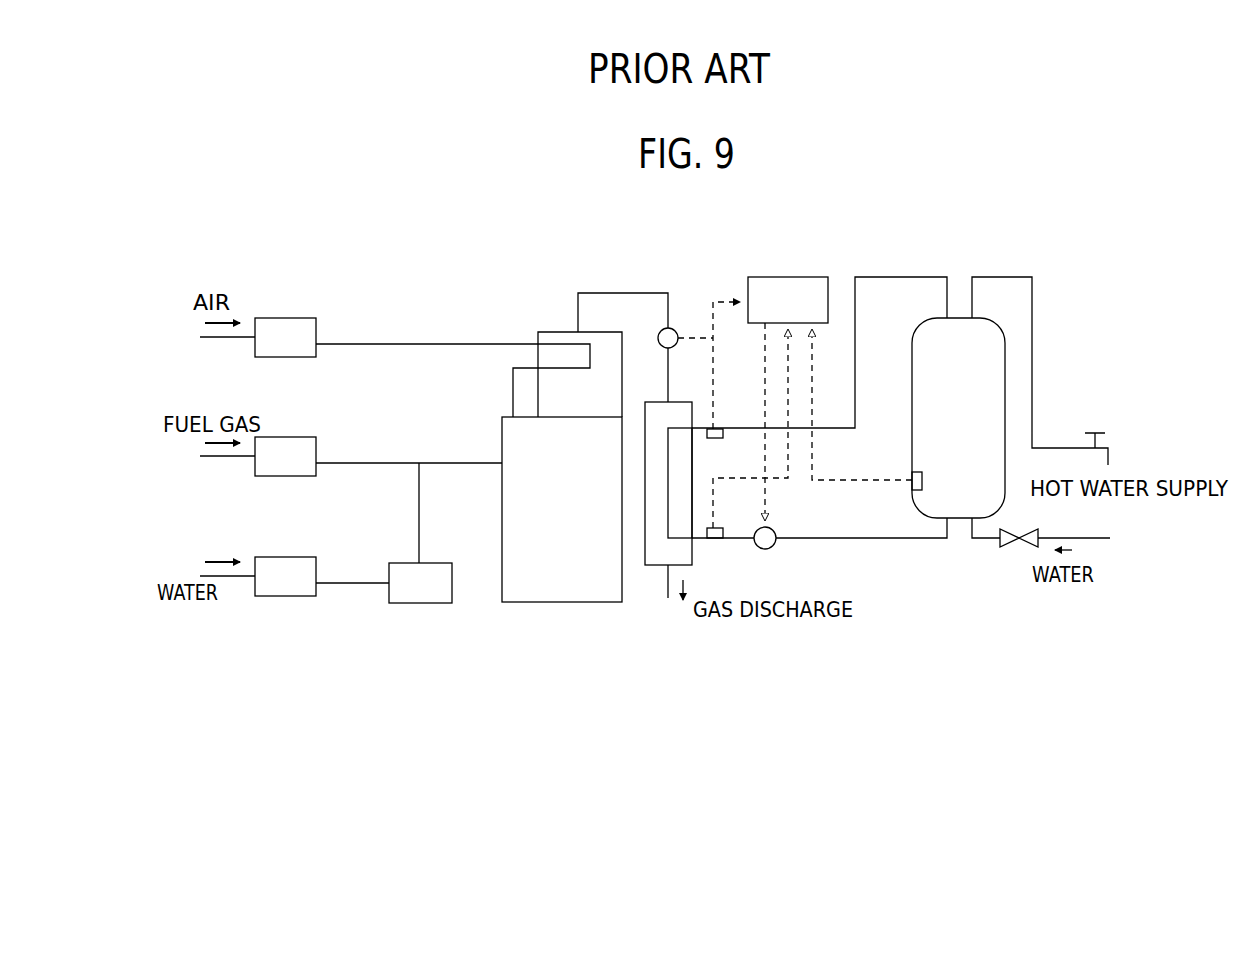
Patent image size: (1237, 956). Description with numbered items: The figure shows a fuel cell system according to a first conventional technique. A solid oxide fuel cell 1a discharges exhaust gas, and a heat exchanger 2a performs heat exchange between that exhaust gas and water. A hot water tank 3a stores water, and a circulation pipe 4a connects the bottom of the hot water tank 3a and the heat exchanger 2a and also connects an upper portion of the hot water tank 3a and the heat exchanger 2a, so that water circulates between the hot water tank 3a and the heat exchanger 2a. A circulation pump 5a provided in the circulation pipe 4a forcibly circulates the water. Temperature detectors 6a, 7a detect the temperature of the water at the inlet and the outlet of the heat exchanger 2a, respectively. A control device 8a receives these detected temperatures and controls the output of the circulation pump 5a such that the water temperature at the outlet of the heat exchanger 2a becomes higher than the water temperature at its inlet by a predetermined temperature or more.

The solid oxide fuel cell 1a is at (562, 603).
The heat exchanger 2a is at (683, 402).
The hot water tank 3a is at (920, 322).
The circulation pipe 4a is at (858, 538).
The circulation pump 5a is at (765, 549).
The temperature detector 6a is at (722, 527).
The temperature detector 7a is at (720, 439).
The control device 8a is at (829, 276).